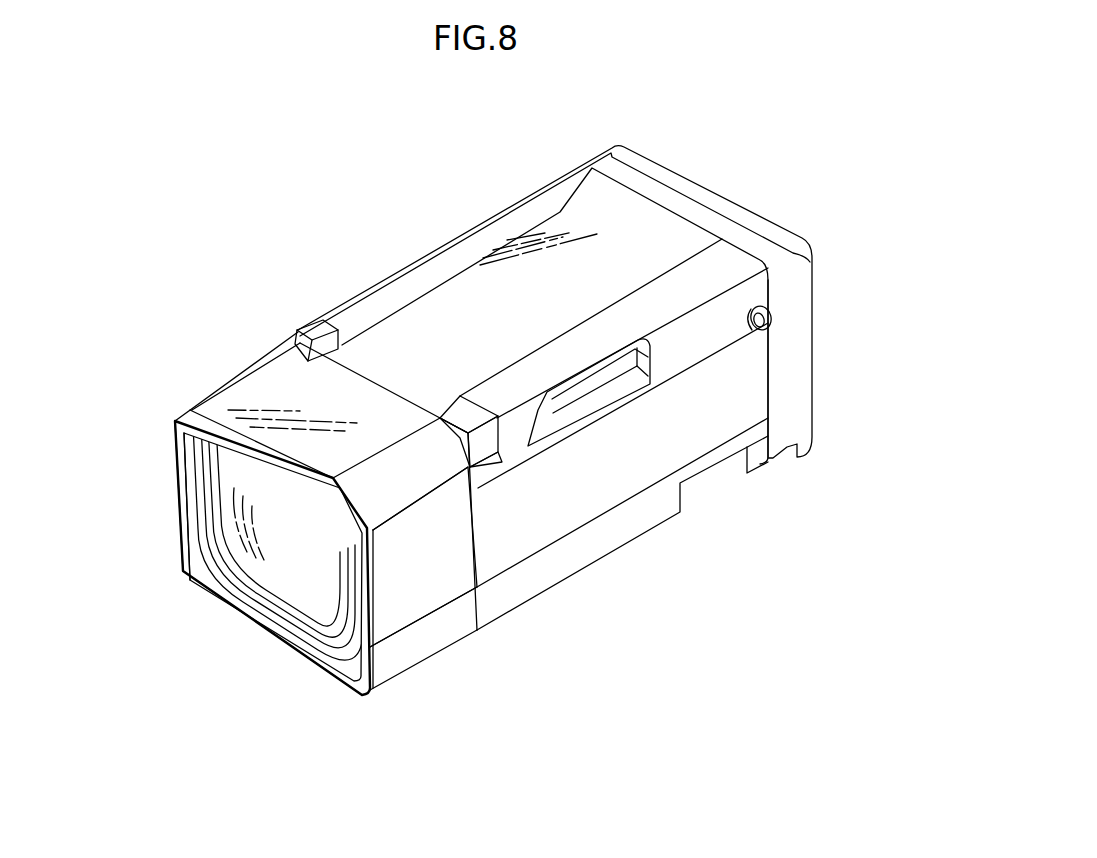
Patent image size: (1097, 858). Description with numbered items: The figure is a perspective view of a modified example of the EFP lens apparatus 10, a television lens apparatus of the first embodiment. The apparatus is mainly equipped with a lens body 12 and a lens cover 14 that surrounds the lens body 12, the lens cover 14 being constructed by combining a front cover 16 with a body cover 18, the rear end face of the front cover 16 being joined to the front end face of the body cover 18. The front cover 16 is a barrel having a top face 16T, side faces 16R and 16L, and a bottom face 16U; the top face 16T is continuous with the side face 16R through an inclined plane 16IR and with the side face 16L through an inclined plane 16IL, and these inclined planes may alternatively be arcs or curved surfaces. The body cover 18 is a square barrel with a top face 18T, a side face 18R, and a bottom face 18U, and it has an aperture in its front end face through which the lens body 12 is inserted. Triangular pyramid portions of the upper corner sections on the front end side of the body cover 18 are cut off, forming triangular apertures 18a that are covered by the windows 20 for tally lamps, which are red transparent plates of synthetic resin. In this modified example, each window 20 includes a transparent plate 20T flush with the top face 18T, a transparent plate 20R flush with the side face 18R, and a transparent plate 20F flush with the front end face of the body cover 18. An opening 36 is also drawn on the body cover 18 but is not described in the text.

The EFP lens apparatus 10 is at (503, 148).
The lens body 12 is at (350, 650).
The lens cover 14 is at (545, 700).
The front cover 16 is at (435, 627).
The side face 16L is at (178, 480).
The bottom face 16U is at (275, 643).
The top face 16T is at (372, 418).
The side face 16R is at (430, 530).
The inclined plane 16IL is at (243, 385).
The inclined plane 16IR is at (362, 492).
The body cover 18 is at (495, 600).
The top face 18T is at (668, 218).
The side face 18R is at (758, 372).
The bottom face 18U is at (663, 521).
The triangular aperture 18a is at (315, 322).
The window for tally lamp 20 is at (360, 338).
The transparent plate 20T is at (480, 400).
The transparent plate 20R is at (497, 437).
The transparent plate 20F is at (480, 452).
The slot opening 36 is at (597, 393).